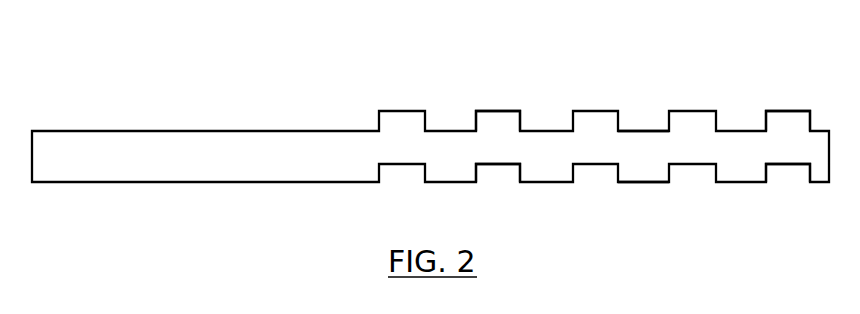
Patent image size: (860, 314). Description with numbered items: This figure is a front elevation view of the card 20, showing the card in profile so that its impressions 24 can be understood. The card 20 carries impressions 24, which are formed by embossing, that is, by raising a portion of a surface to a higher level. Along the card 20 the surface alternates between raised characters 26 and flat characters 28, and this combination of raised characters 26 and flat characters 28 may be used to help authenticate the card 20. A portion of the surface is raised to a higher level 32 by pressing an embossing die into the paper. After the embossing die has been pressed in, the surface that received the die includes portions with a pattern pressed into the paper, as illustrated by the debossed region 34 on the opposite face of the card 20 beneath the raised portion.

The card 20 is at (117, 140).
The impressions 24 is at (488, 125).
The raised characters 26 is at (509, 125).
The flat characters 28 is at (636, 143).
The higher level 32 is at (778, 121).
The debossed region 34 is at (780, 175).